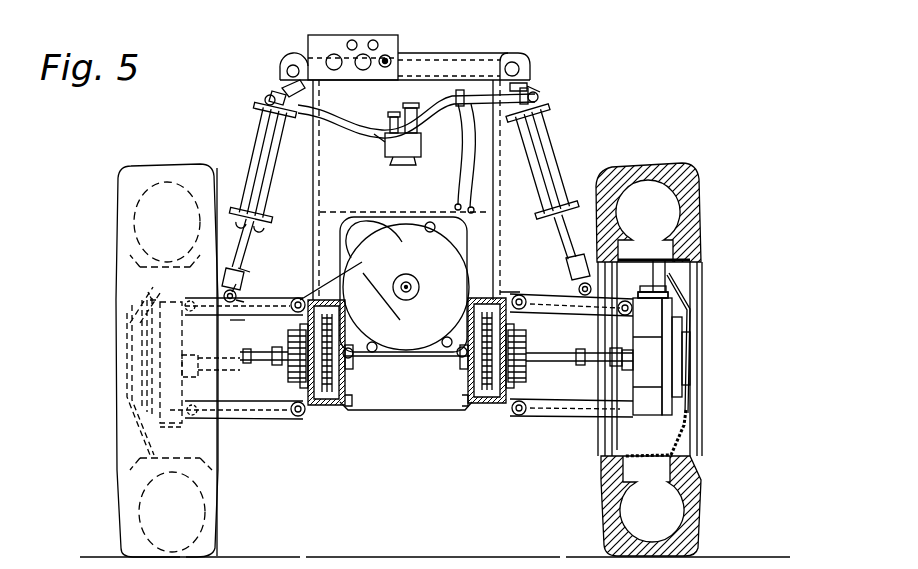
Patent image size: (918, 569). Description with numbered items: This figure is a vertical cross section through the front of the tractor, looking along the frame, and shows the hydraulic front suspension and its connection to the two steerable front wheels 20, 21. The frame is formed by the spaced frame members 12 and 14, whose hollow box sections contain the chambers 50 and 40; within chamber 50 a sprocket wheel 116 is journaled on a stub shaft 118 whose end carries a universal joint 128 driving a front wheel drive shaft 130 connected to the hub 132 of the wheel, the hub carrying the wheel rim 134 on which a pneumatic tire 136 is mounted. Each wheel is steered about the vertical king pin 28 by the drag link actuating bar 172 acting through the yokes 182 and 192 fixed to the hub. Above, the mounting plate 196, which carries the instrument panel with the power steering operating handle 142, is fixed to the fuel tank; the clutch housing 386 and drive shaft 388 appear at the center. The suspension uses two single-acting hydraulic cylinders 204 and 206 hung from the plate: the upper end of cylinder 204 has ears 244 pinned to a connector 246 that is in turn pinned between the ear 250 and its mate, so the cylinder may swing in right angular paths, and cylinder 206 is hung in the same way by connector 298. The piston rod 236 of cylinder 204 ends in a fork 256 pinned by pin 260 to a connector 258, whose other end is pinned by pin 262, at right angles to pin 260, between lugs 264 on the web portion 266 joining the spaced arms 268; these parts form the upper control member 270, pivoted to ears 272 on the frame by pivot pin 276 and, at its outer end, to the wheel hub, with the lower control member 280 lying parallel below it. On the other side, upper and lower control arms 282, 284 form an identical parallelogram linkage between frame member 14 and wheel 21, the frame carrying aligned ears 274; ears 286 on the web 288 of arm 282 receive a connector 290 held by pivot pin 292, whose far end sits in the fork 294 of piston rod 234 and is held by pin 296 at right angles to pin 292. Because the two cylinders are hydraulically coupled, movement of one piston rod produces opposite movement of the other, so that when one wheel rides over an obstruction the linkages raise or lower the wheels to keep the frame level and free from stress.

The frame member 12 is at (353, 416).
The frame member 14 is at (468, 410).
The front wheel 20 is at (114, 434).
The front wheel 21 is at (713, 451).
The king pin 28 is at (148, 292).
The chamber 40 is at (490, 408).
The chamber 50 is at (335, 407).
The sprocket wheel 116 is at (350, 392).
The stub shaft 118 is at (352, 350).
The universal joint 128 is at (298, 385).
The front wheel drive shaft 130 is at (252, 362).
The hub 132 is at (690, 357).
The wheel rim 134 is at (668, 300).
The pneumatic tire 136 is at (692, 184).
The operating handle 142 is at (395, 54).
The drag link actuating bar 172 is at (400, 398).
The yoke 182 is at (668, 288).
The yoke 192 is at (320, 44).
The mounting plate 196 is at (392, 186).
The hydraulic cylinder 204 is at (250, 168).
The hydraulic cylinder 206 is at (558, 148).
The piston rod 234 is at (560, 222).
The piston rod 236 is at (243, 230).
The ears 244 is at (258, 99).
The connector 246 is at (278, 84).
The ear 250 is at (290, 62).
The fork 256 is at (228, 270).
The connector 258 is at (242, 288).
The pin 260 is at (226, 278).
The pin 262 is at (223, 298).
The lugs 264 is at (240, 301).
The web portion 266 is at (211, 353).
The arms 268 is at (262, 312).
The upper control member 270 is at (252, 318).
The ears 272 is at (290, 296).
The ears 274 is at (680, 302).
The pivot pin 276 is at (350, 291).
The lower control member 280 is at (240, 422).
The upper control arm 282 is at (524, 293).
The lower control arm 284 is at (568, 420).
The ears 286 is at (600, 297).
The web 288 is at (560, 313).
The connector 290 is at (579, 287).
The pivot pin 292 is at (590, 300).
The fork 294 is at (566, 246).
The pin 296 is at (572, 264).
The connector 298 is at (542, 85).
The clutch housing 386 is at (405, 243).
The drive shaft 388 is at (419, 290).